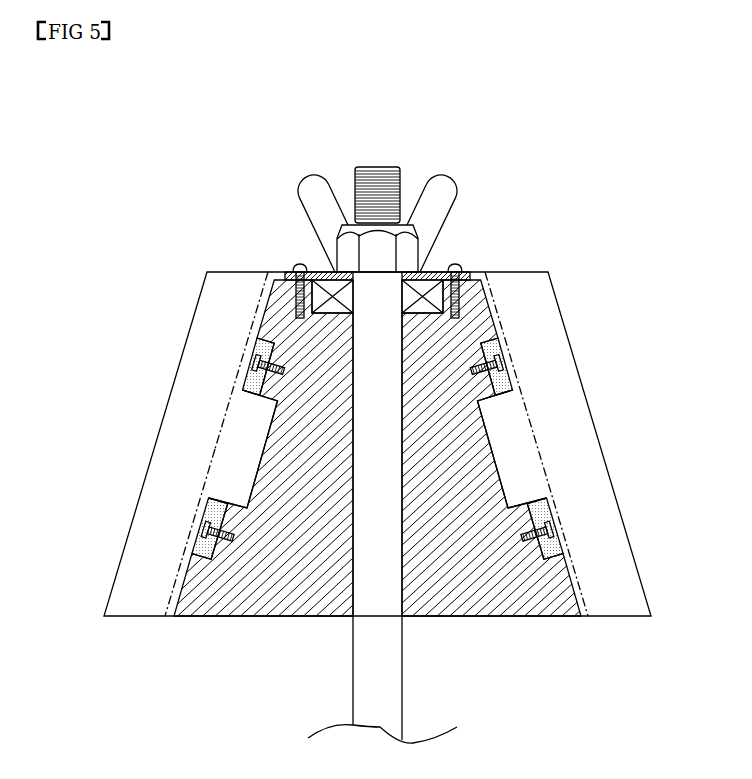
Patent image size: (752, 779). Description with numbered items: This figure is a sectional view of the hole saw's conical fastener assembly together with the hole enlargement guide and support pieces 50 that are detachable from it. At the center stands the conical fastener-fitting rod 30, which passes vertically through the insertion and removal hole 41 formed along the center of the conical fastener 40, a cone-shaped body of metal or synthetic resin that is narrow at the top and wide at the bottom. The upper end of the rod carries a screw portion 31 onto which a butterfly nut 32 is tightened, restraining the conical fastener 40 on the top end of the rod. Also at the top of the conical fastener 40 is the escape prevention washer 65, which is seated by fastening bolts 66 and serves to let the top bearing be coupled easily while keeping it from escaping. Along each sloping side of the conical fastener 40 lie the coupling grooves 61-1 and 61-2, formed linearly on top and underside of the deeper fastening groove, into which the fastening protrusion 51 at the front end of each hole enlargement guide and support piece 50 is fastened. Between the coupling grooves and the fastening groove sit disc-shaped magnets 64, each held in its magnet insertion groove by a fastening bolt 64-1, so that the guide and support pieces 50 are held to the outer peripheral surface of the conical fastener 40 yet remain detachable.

The conical fastener-fitting rod 30 is at (383, 695).
The screw portion 31 is at (375, 176).
The butterfly nut 32 is at (441, 193).
The conical fastener 40 is at (248, 588).
The insertion and removal hole 41 is at (401, 600).
The hole enlargement guide and support piece 50 is at (153, 528).
The fastening protrusion 51 is at (240, 458).
The coupling groove 61-1 is at (272, 328).
The coupling groove 61-2 is at (181, 586).
The disc-shaped magnet 64 is at (254, 366).
The fastening bolt 64-1 is at (257, 353).
The escape prevention washer 65 is at (458, 264).
The fastening bolt 66 is at (296, 264).